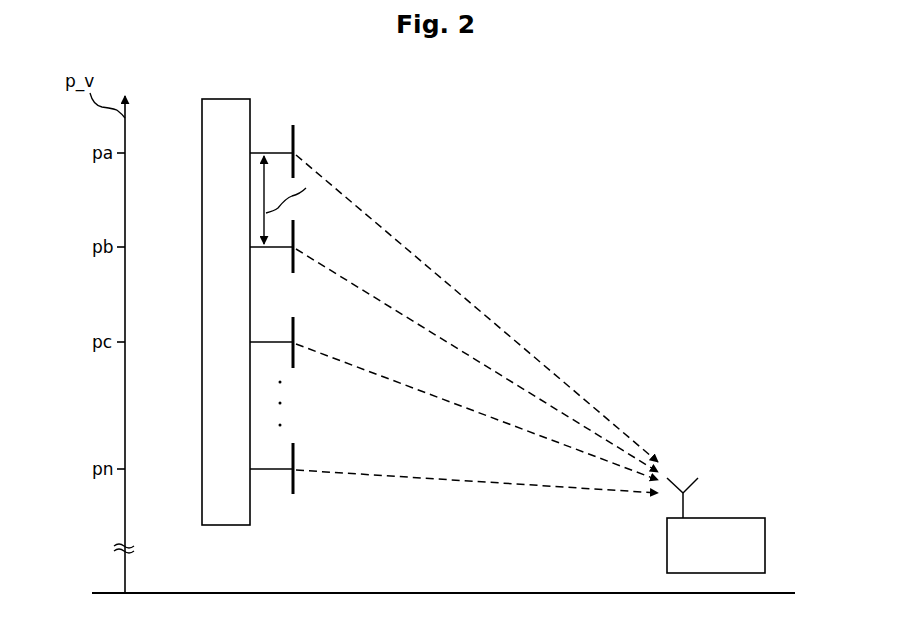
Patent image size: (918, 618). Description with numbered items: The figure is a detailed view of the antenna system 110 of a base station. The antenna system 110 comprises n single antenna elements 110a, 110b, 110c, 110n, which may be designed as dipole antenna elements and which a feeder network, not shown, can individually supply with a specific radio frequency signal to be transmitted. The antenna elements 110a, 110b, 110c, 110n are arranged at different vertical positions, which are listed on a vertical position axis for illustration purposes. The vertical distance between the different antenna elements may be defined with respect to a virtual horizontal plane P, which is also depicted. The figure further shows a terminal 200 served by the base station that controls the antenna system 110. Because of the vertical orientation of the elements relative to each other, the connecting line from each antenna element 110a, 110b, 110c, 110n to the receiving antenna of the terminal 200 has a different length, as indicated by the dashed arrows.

The antenna system 110 is at (202, 99).
The antenna element 110a is at (296, 135).
The antenna element 110b is at (296, 232).
The antenna element 110c is at (296, 328).
The antenna element 110n is at (296, 455).
The terminal 200 is at (765, 537).
The virtual horizontal plane P is at (351, 593).